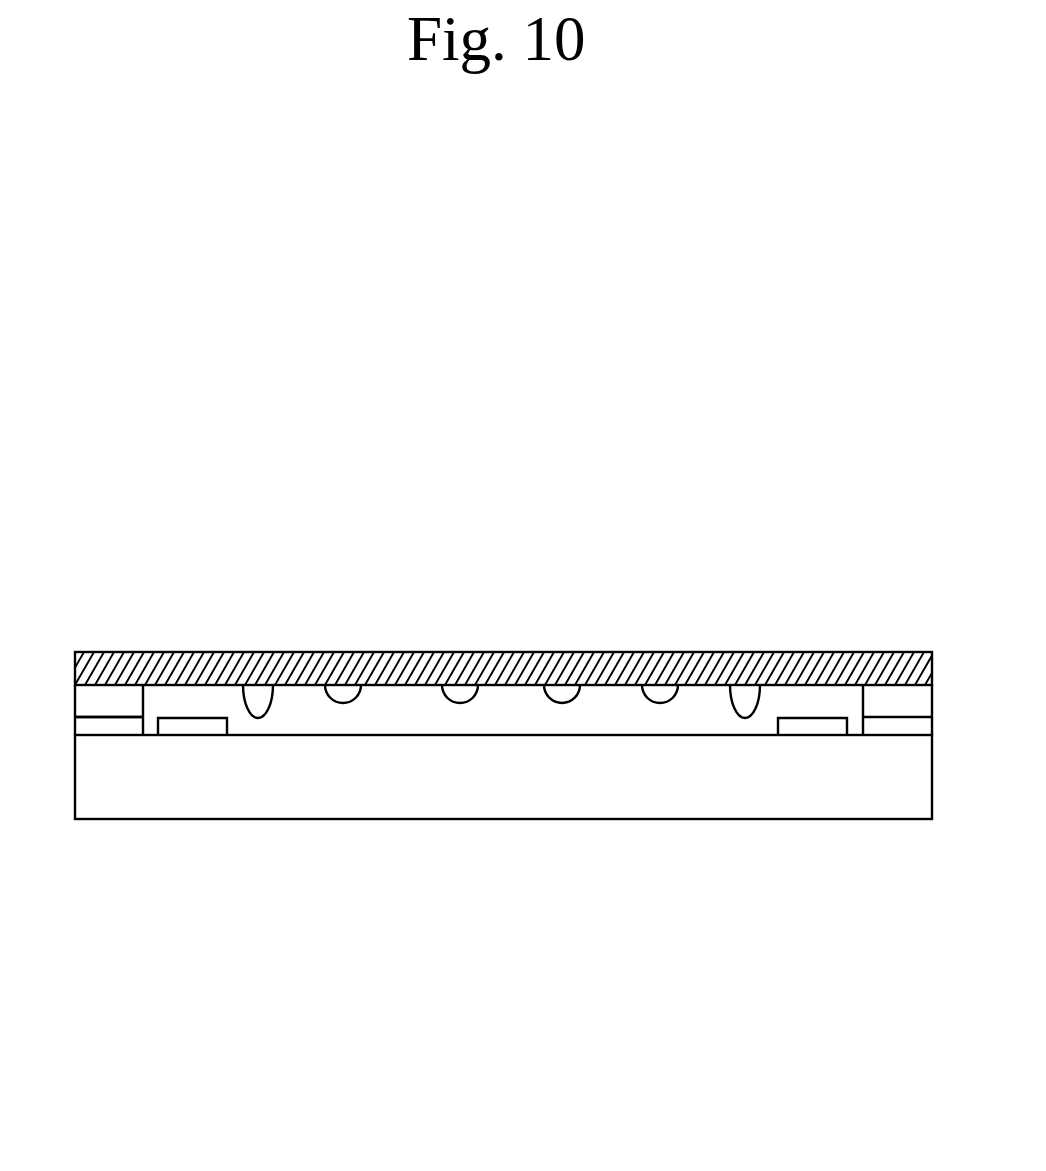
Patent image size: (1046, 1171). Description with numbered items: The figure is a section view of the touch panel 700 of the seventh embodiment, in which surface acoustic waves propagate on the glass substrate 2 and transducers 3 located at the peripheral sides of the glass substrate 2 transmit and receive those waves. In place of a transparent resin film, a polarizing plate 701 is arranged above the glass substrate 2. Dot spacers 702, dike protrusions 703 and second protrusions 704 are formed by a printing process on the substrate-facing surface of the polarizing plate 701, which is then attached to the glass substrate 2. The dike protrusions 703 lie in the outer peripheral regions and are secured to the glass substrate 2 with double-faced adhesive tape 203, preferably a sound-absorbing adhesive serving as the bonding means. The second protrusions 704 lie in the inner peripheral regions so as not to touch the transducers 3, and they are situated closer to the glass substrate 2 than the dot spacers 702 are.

The touch panel 700 is at (460, 474).
The glass substrate 2 is at (560, 802).
The transducers 3 is at (210, 727).
The double-faced adhesive tape 203 is at (110, 718).
The polarizing plate 701 is at (560, 653).
The dot spacers 702 is at (665, 703).
The dike protrusions 703 is at (109, 700).
The second protrusions 704 is at (260, 702).